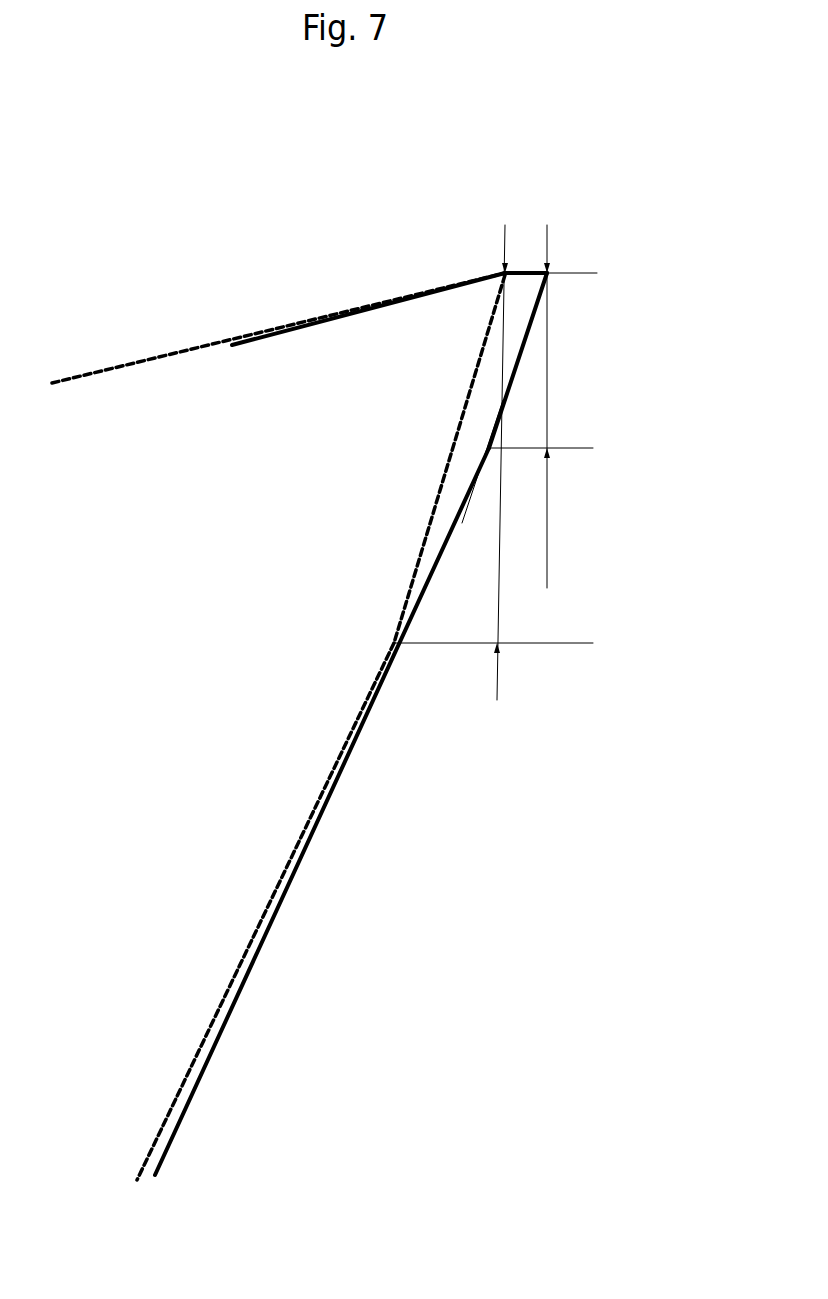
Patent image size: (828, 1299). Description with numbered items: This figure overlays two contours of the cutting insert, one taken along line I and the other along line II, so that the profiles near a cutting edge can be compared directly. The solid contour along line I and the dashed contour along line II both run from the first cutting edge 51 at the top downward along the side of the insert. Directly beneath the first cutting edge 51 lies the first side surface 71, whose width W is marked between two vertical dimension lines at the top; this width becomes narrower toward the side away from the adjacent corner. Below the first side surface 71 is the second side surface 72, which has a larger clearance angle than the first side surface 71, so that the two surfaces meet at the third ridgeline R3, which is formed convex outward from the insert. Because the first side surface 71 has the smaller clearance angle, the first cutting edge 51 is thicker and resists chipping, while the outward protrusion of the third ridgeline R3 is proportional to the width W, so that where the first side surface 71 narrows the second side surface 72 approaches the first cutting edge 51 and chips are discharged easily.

The first cutting edge 51 is at (548, 272).
The first side surface 71 is at (537, 305).
The second side surface 72 is at (367, 693).
The third ridgeline R3 is at (393, 643).
The width of the first side surface W is at (523, 447).
The line I- I is at (322, 316).
The line II- II is at (142, 357).